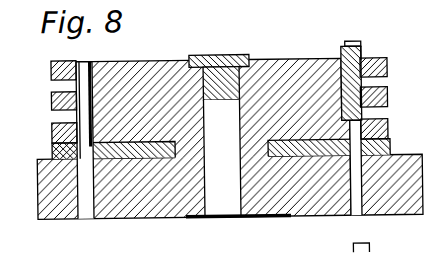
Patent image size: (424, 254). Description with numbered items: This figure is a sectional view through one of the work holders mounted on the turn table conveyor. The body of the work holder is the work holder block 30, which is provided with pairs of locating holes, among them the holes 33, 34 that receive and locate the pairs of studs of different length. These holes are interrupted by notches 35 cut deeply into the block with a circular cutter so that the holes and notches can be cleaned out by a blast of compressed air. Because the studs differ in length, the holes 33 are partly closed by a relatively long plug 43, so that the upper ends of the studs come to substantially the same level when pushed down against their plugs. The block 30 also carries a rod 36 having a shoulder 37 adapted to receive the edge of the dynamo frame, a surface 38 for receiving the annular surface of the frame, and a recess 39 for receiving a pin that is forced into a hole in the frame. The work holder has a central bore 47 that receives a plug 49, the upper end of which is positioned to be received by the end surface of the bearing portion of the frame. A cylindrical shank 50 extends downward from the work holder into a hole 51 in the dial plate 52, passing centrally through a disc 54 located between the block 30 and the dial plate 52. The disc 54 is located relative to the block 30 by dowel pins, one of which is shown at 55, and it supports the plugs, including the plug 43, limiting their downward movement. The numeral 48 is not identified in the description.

The work holder block 30 is at (305, 60).
The holes 33 is at (312, 245).
The holes 34 is at (148, 245).
The notches 35 is at (77, 84).
The rod 36 is at (362, 54).
The shoulder 37 is at (342, 56).
The surface 38 is at (363, 46).
The recess 39 is at (356, 43).
The plug 43 is at (416, 103).
The central bore 47 is at (230, 199).
The member 48 is at (364, 244).
The plug 49 is at (208, 55).
The cylindrical shank 50 is at (200, 217).
The hole 51 is at (282, 218).
The dial plate 52 is at (405, 157).
The disc 54 is at (52, 149).
The dowel pin 55 is at (84, 59).